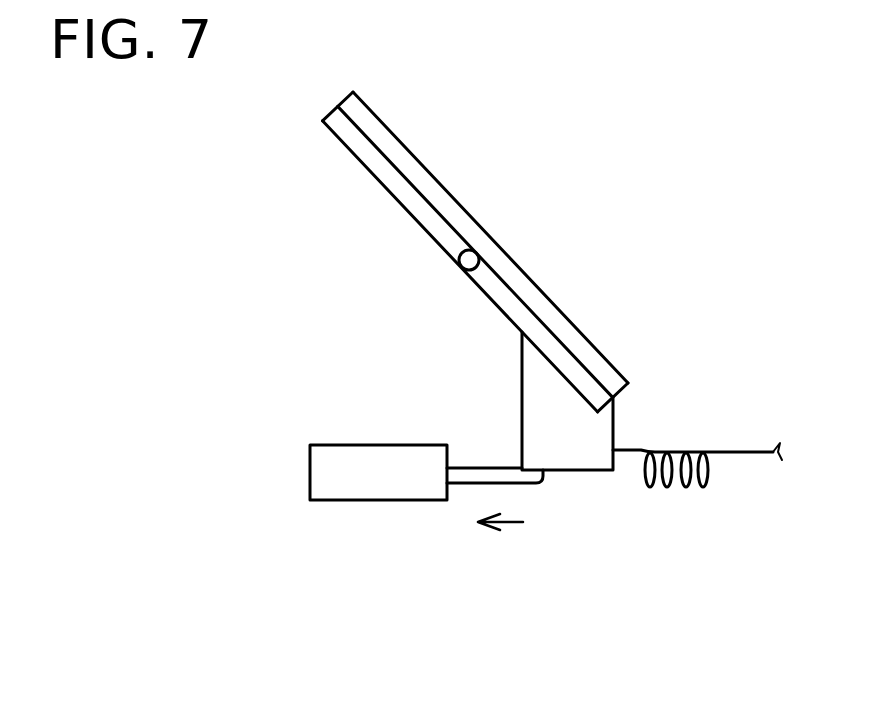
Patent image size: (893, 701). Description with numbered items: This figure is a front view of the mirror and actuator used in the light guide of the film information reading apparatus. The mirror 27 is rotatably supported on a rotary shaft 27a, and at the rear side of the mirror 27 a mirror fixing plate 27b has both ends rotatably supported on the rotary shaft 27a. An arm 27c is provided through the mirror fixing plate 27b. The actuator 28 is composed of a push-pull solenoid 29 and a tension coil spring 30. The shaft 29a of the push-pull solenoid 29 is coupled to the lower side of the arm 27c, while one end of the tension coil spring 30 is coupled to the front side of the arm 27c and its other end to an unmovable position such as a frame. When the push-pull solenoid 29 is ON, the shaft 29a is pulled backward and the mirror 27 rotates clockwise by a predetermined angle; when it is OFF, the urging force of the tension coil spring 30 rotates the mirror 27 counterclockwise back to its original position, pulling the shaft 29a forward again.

The mirror 27 is at (435, 195).
The rotary shaft 27a is at (473, 255).
The mirror fixing plate 27b is at (427, 213).
The arm 27c is at (535, 387).
The actuator 28 is at (545, 537).
The push-pull solenoid 29 is at (403, 482).
The shaft 29a is at (498, 473).
The tension coil spring 30 is at (647, 475).